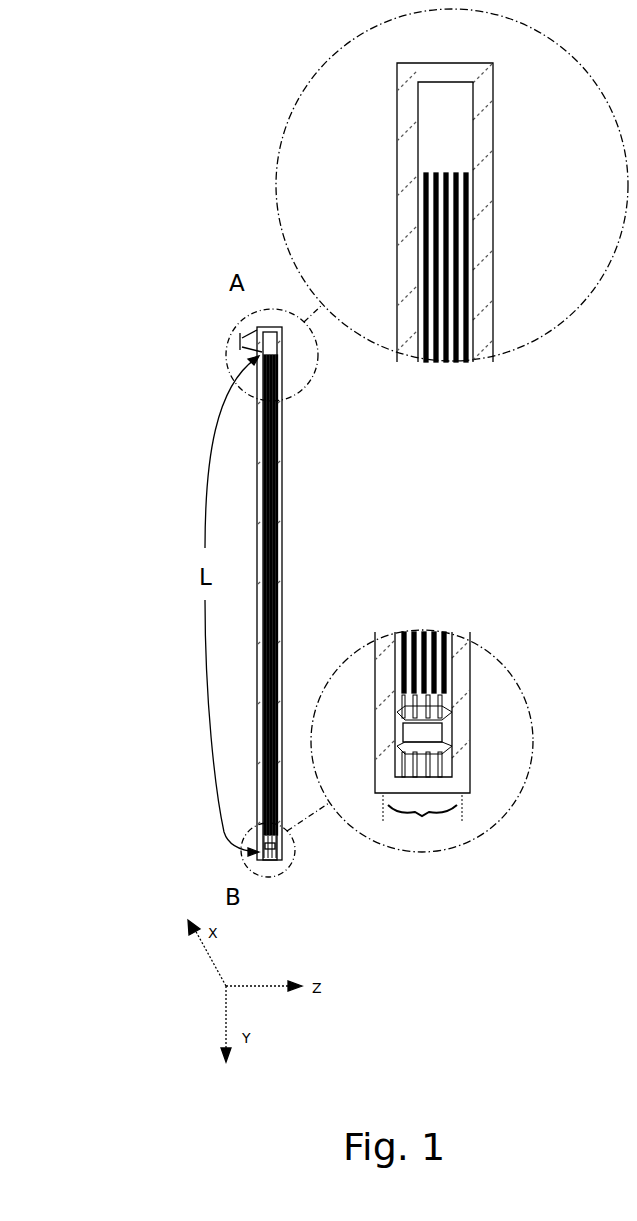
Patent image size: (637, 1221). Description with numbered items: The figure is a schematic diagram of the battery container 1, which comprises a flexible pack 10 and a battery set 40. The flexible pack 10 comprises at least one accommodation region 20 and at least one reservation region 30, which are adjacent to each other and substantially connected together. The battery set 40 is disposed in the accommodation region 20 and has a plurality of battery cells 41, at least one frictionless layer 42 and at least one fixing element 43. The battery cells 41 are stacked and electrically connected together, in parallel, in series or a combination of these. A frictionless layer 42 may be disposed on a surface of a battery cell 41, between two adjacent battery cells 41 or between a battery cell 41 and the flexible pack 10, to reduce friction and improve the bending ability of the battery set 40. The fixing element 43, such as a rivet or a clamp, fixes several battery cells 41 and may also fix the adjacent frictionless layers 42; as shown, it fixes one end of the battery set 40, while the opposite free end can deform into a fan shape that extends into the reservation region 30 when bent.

The battery container 1 is at (140, 362).
The flexible pack 10 is at (470, 77).
The accommodation region 20 is at (460, 155).
The reservation region 30 is at (430, 120).
The battery set 40 is at (422, 770).
The battery cells 41 is at (460, 202).
The frictionless layer 42 is at (455, 253).
The fixing element 43 is at (430, 735).